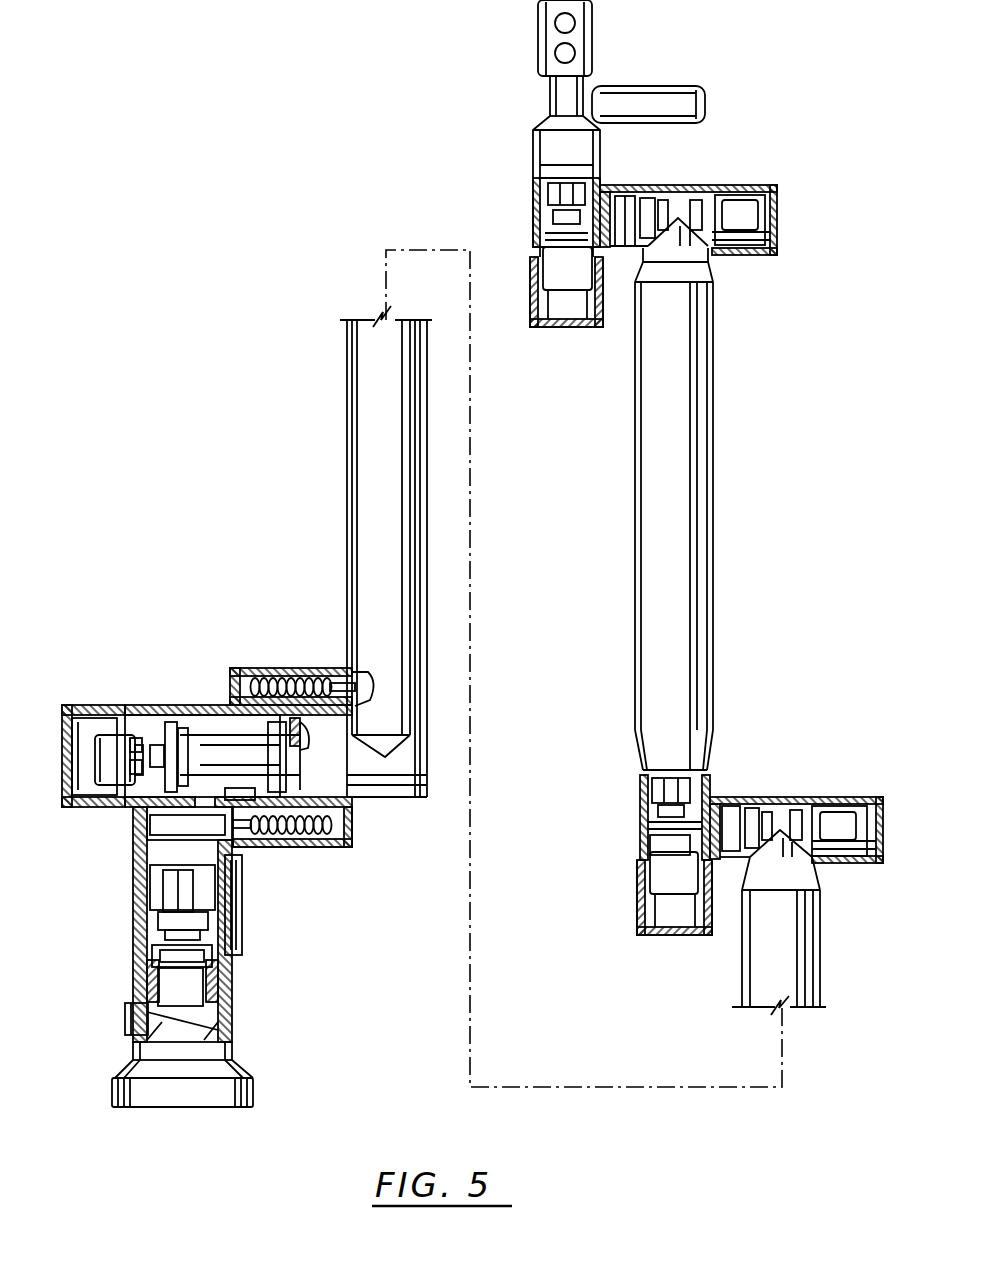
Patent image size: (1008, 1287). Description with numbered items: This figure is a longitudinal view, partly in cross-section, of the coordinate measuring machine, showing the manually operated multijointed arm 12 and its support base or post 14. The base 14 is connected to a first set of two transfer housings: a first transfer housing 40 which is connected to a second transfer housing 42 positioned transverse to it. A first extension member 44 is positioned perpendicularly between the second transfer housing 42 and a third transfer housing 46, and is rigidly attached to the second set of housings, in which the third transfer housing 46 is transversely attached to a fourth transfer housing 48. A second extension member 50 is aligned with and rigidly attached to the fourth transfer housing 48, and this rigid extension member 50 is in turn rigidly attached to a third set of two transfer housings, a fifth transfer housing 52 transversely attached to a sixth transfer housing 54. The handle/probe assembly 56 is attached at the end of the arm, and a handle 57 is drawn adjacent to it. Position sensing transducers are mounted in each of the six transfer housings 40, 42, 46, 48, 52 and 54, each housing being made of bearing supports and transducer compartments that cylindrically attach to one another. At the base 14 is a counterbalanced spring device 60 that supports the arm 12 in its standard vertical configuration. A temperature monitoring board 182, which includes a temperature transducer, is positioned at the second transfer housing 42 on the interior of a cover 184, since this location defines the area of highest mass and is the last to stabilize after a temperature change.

The multijointed arm 12 is at (318, 212).
The base 14 is at (232, 1053).
The first transfer housing 40 is at (133, 898).
The second transfer housing 42 is at (195, 712).
The first extension member 44 is at (742, 981).
The third transfer housing 46 is at (778, 797).
The fourth transfer housing 48 is at (640, 822).
The second extension member 50 is at (635, 470).
The fifth transfer housing 52 is at (724, 185).
The sixth transfer housing 54 is at (530, 247).
The handle/probe assembly 56 is at (604, 30).
The handle 57 is at (652, 89).
The counterbalanced spring device 60 is at (262, 666).
The temperature monitoring board 182 is at (95, 720).
The cover 184 is at (62, 803).